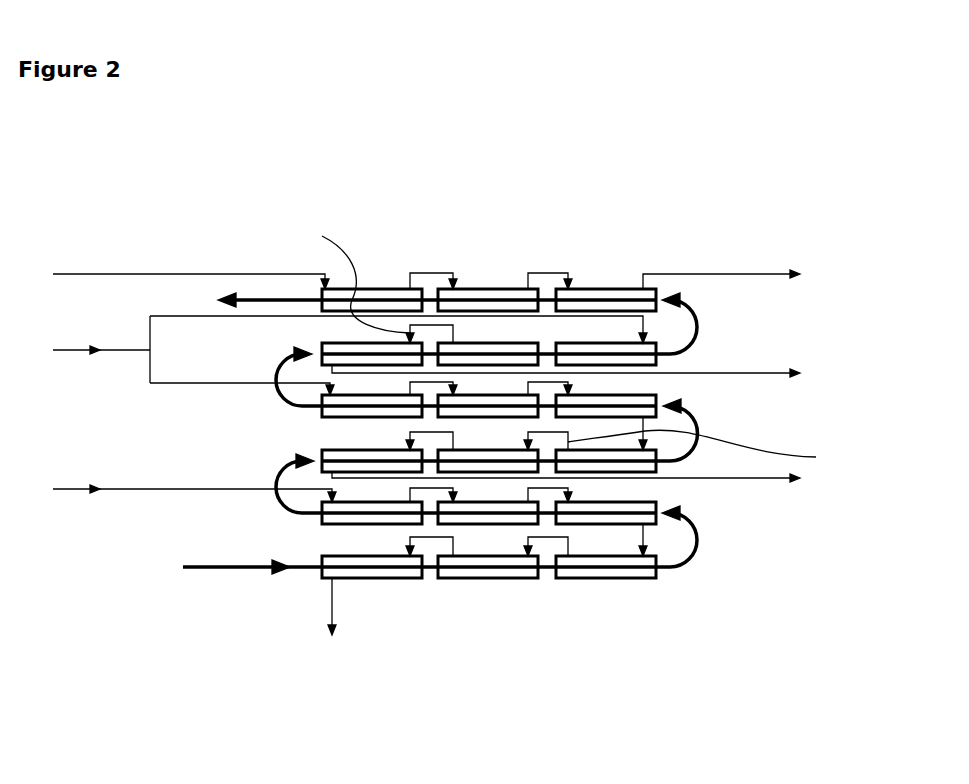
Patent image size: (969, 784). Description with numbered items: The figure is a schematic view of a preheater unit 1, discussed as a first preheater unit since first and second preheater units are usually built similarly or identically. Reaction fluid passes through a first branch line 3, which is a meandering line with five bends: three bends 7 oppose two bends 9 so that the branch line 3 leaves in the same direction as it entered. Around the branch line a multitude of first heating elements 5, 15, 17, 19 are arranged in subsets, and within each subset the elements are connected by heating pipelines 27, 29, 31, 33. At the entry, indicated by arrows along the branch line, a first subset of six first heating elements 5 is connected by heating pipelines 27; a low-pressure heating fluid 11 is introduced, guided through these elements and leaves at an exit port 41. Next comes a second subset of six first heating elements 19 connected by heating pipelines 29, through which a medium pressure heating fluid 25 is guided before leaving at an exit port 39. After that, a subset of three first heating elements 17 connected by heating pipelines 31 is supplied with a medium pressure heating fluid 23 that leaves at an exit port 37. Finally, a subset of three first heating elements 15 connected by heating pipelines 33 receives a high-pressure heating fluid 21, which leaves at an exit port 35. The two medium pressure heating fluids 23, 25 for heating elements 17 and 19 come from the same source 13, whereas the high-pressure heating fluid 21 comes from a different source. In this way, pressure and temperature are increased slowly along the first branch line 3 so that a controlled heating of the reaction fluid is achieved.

The preheater unit 1 is at (117, 235).
The first branch line 3 is at (262, 300).
The first heating elements 5 is at (500, 517).
The bends 7 is at (693, 322).
The bends 9 is at (277, 489).
The low-pressure heating fluid 11 is at (127, 489).
The source 13 is at (115, 350).
The first heating elements 15 is at (477, 298).
The first heating elements 17 is at (587, 348).
The first heating elements 19 is at (362, 457).
The high-pressure heating fluid 21 is at (215, 274).
The medium pressure heating fluid 23 is at (212, 316).
The medium pressure heating fluid 25 is at (220, 383).
The heating pipelines 27 is at (568, 542).
The heating pipelines 29 is at (685, 450).
The heating pipelines 31 is at (354, 279).
The heating pipelines 33 is at (568, 282).
The exit port 35 is at (752, 274).
The exit port 37 is at (777, 373).
The exit port 39 is at (768, 478).
The exit port 41 is at (332, 612).